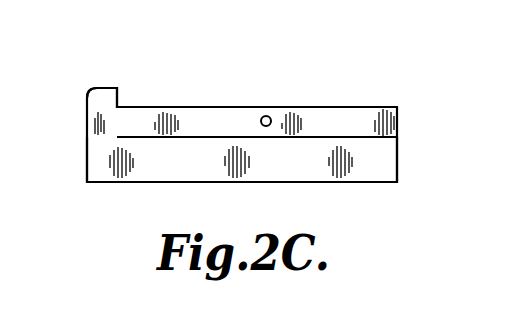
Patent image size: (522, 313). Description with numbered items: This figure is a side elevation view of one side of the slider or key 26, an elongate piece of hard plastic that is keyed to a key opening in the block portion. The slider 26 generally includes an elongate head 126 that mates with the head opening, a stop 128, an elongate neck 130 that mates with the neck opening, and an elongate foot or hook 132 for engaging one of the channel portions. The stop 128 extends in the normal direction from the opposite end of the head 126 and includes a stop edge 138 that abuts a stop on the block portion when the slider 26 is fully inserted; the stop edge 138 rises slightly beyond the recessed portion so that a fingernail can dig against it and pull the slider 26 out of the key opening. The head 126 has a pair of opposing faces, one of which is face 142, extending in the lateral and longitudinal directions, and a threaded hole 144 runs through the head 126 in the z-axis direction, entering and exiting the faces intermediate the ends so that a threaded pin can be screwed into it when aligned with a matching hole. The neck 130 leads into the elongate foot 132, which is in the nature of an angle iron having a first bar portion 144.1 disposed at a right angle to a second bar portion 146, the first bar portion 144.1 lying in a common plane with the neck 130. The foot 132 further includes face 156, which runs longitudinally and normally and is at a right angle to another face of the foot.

The slider 26 is at (395, 102).
The elongate head 126 is at (200, 118).
The stop 128 is at (106, 88).
The elongate neck 130 is at (87, 148).
The elongate foot 132 is at (86, 181).
The stop edge 138 is at (119, 89).
The face 142 is at (339, 117).
The threaded hole 144 is at (270, 116).
The first bar portion 144.1 is at (397, 148).
The second bar portion 146 is at (397, 168).
The face 156 is at (208, 183).